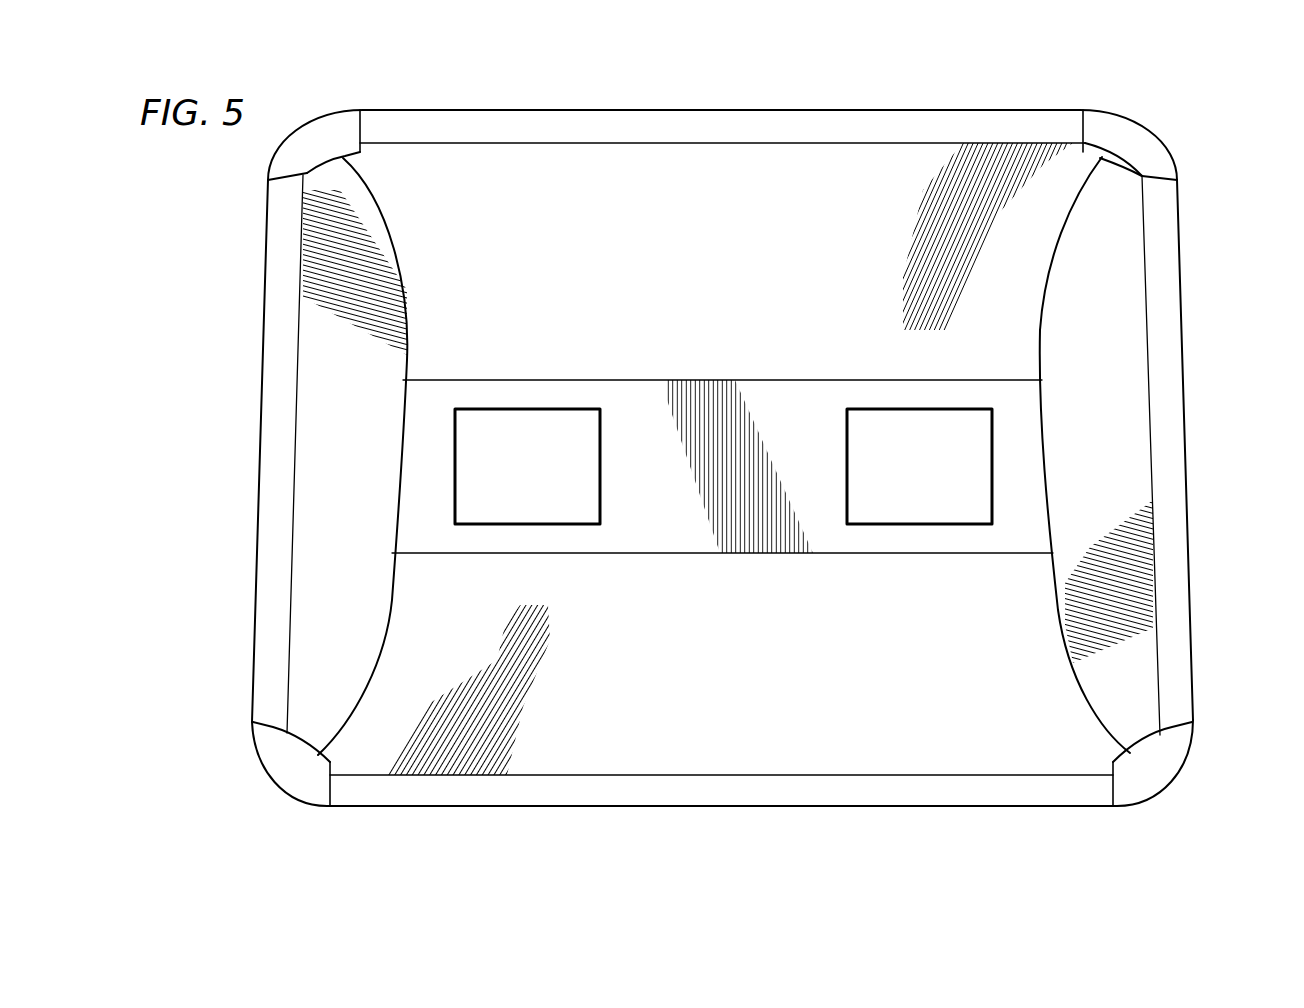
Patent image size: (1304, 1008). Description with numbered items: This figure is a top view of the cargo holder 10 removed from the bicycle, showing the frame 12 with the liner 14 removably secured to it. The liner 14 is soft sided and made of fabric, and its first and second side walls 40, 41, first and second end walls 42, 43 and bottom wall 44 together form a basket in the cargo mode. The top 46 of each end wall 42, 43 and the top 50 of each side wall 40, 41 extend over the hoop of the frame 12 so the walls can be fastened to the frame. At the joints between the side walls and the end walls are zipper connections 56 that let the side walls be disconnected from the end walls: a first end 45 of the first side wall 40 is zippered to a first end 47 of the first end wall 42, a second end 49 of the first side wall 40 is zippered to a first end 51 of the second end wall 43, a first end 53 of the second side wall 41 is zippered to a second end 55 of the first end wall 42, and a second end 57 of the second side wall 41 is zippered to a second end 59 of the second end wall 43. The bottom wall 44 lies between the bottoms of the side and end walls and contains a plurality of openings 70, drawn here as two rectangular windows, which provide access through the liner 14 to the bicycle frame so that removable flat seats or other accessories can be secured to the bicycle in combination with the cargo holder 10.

The cargo holder 10 is at (277, 813).
The frame 12 is at (273, 778).
The liner 14 is at (910, 172).
The first side wall 40 is at (775, 737).
The second side wall 41 is at (557, 177).
The first end wall 42 is at (1112, 610).
The second end wall 43 is at (322, 532).
The bottom wall 44 is at (1017, 438).
The first end of the first side wall 45 is at (1025, 735).
The top of the end wall 46 is at (273, 463).
The first end of the first end wall 47 is at (1127, 690).
The second end of the first side wall 49 is at (518, 732).
The top of the side wall 50 is at (731, 130).
The first end of the second end wall 51 is at (315, 647).
The first end of the second side wall 53 is at (1032, 198).
The second end of the first end wall 55 is at (1102, 257).
The zipper connection 56 is at (407, 320).
The second end of the second side wall 57 is at (473, 185).
The second end of the second end wall 59 is at (343, 258).
The opening 70 is at (520, 452).